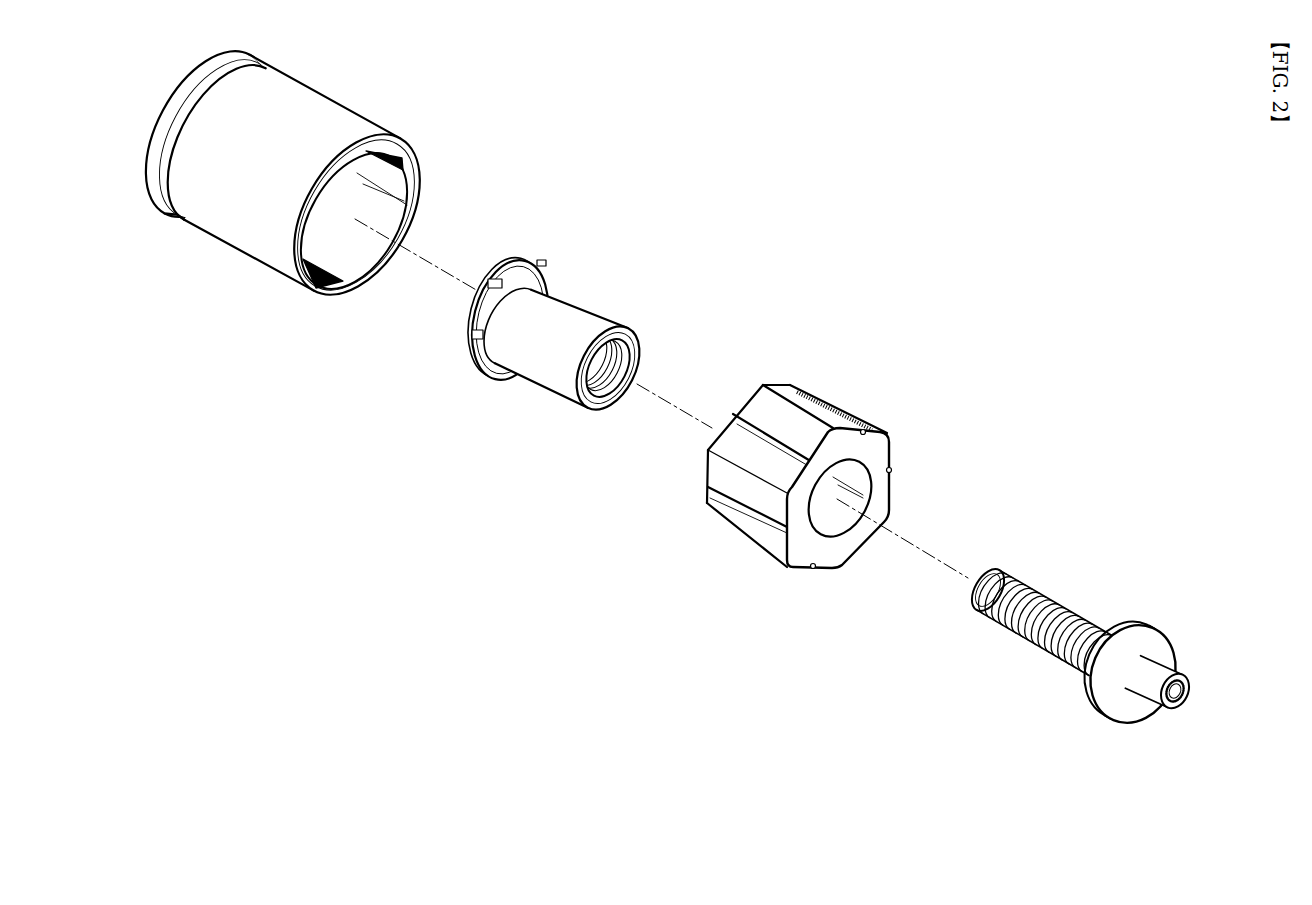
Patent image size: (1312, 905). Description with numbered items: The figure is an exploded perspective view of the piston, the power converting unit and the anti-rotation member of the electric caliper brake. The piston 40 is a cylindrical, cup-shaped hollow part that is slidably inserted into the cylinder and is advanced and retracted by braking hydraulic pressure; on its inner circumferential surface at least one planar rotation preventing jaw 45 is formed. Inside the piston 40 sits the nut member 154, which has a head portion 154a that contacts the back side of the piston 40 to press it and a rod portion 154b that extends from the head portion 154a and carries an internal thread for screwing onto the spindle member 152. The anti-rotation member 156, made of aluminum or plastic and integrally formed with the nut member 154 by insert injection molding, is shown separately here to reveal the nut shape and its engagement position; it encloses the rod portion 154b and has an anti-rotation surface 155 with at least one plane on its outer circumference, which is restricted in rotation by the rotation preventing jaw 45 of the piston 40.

The piston 40 is at (299, 191).
The rotation preventing jaw 45 is at (315, 274).
The nut member 154 is at (583, 301).
The head portion 154a is at (567, 268).
The rod portion 154b is at (594, 323).
The anti-rotation surface 155 is at (748, 456).
The anti-rotation member 156 is at (820, 475).
The spindle member 152 is at (1140, 622).